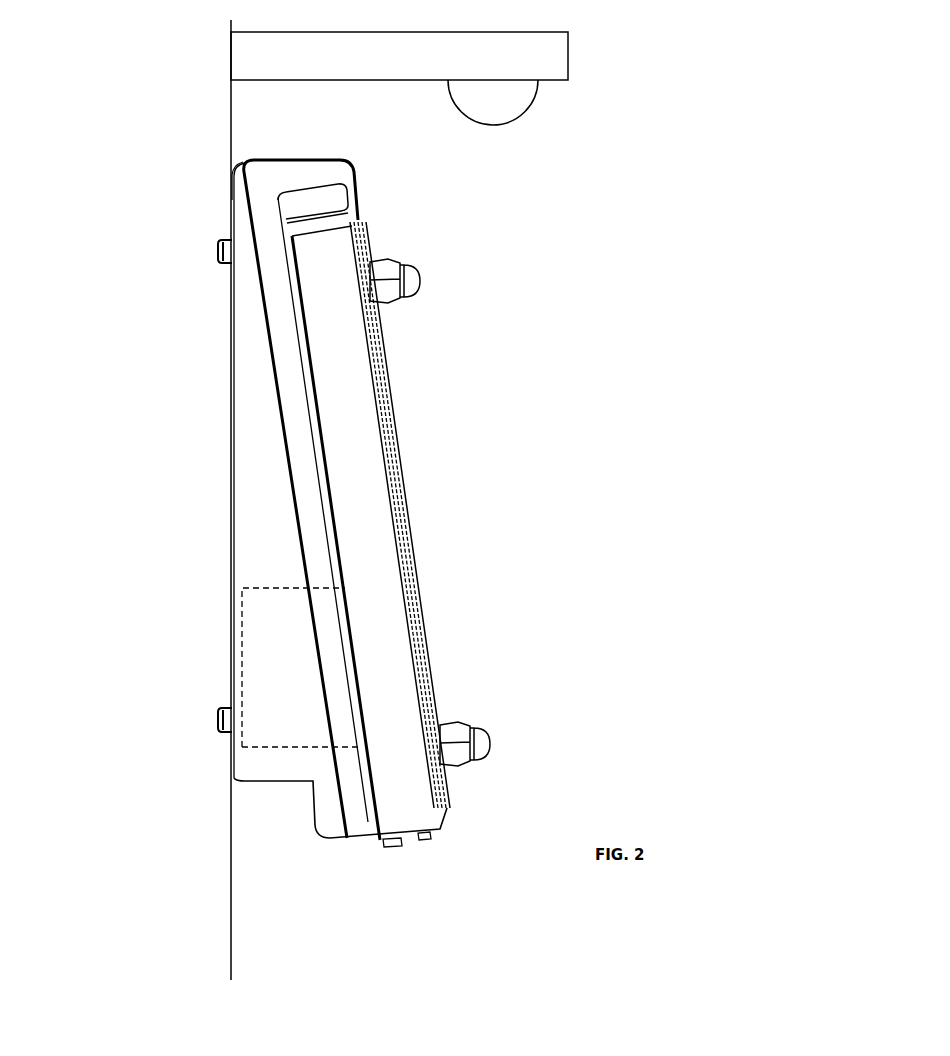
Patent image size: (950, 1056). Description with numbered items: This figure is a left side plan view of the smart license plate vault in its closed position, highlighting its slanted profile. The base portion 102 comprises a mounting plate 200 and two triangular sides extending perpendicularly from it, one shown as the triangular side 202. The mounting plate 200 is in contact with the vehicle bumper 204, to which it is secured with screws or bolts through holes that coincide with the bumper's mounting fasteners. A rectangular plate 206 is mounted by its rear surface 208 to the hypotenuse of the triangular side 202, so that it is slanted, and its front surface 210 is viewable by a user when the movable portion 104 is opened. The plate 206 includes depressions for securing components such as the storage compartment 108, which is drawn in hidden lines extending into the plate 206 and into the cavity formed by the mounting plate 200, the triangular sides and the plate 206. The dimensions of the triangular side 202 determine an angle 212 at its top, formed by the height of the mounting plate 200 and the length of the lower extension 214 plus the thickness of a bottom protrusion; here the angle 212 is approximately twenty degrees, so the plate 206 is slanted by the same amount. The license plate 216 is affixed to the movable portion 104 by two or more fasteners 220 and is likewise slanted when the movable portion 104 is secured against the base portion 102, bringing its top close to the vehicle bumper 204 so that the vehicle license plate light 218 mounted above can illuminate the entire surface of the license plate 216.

The base portion 102 is at (321, 544).
The movable portion 104 is at (372, 557).
The storage compartment 108 is at (242, 648).
The mounting plate 200 is at (231, 497).
The triangular side 202 is at (258, 448).
The vehicle bumper 204 is at (231, 107).
The plate 206 is at (315, 522).
The rear surface 208 is at (317, 386).
The front surface 210 is at (318, 387).
The angle 212 is at (232, 197).
The lower extension 214 is at (273, 787).
The license plate 216 is at (400, 461).
The vehicle license plate light 218 is at (530, 110).
The fasteners 220 is at (418, 268).